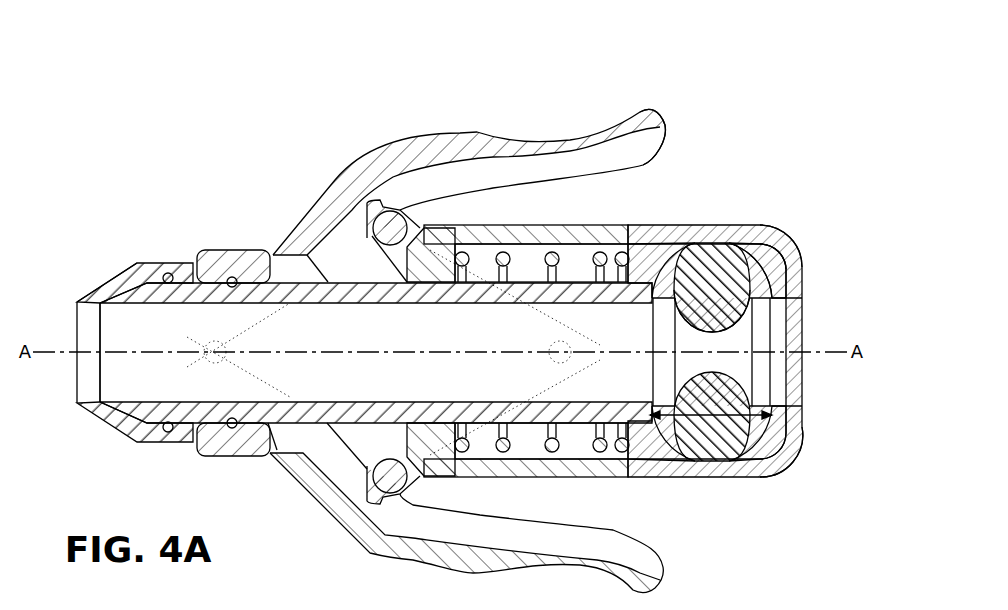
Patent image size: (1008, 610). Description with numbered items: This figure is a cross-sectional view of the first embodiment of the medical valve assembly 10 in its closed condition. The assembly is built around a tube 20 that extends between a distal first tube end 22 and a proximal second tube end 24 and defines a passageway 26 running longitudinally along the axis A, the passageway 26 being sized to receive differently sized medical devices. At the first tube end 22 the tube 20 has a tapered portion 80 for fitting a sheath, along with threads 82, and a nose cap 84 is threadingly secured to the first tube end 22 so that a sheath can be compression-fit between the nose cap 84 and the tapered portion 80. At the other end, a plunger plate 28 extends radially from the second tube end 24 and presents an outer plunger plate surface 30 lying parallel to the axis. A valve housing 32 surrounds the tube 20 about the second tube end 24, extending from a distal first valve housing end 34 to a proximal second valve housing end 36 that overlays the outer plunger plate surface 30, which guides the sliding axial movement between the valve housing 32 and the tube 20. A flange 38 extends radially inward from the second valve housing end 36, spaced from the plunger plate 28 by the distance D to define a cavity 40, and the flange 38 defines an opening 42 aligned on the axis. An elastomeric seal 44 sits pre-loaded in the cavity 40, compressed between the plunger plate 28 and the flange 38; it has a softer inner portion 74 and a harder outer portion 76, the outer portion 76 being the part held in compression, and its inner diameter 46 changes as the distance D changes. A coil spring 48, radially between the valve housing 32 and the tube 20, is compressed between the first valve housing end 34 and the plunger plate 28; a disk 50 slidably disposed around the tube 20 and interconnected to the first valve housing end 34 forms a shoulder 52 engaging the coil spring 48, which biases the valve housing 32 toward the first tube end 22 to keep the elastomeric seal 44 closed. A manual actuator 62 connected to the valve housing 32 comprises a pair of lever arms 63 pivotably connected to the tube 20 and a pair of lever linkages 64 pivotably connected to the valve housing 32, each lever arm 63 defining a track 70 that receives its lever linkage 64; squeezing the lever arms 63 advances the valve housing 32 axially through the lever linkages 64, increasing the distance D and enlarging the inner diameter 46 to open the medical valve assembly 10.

The medical valve assembly 10 is at (813, 118).
The tube 20 is at (253, 287).
The first tube end 22 is at (107, 422).
The second tube end 24 is at (668, 250).
The passageway 26 is at (127, 397).
The plunger plate 28 is at (688, 447).
The outer plunger plate surface 30 is at (660, 461).
The valve housing 32 is at (710, 243).
The first valve housing end 34 is at (440, 253).
The second valve housing end 36 is at (805, 255).
The flange 38 is at (790, 345).
The cavity 40 is at (740, 444).
The opening 42 is at (780, 402).
The elastomeric seal 44 is at (785, 240).
The inner diameter 46 is at (718, 335).
The coil spring 48 is at (565, 258).
The disk 50 is at (438, 247).
The shoulder 52 is at (527, 258).
The manual actuator 62 is at (651, 108).
The lever arms 63 is at (323, 210).
The lever linkages 64 is at (390, 492).
The track 70 is at (387, 205).
The inner portion 74 is at (752, 240).
The outer portion 76 is at (808, 280).
The tapered portion 80 is at (112, 282).
The threads 82 is at (165, 273).
The nose cap 84 is at (100, 273).